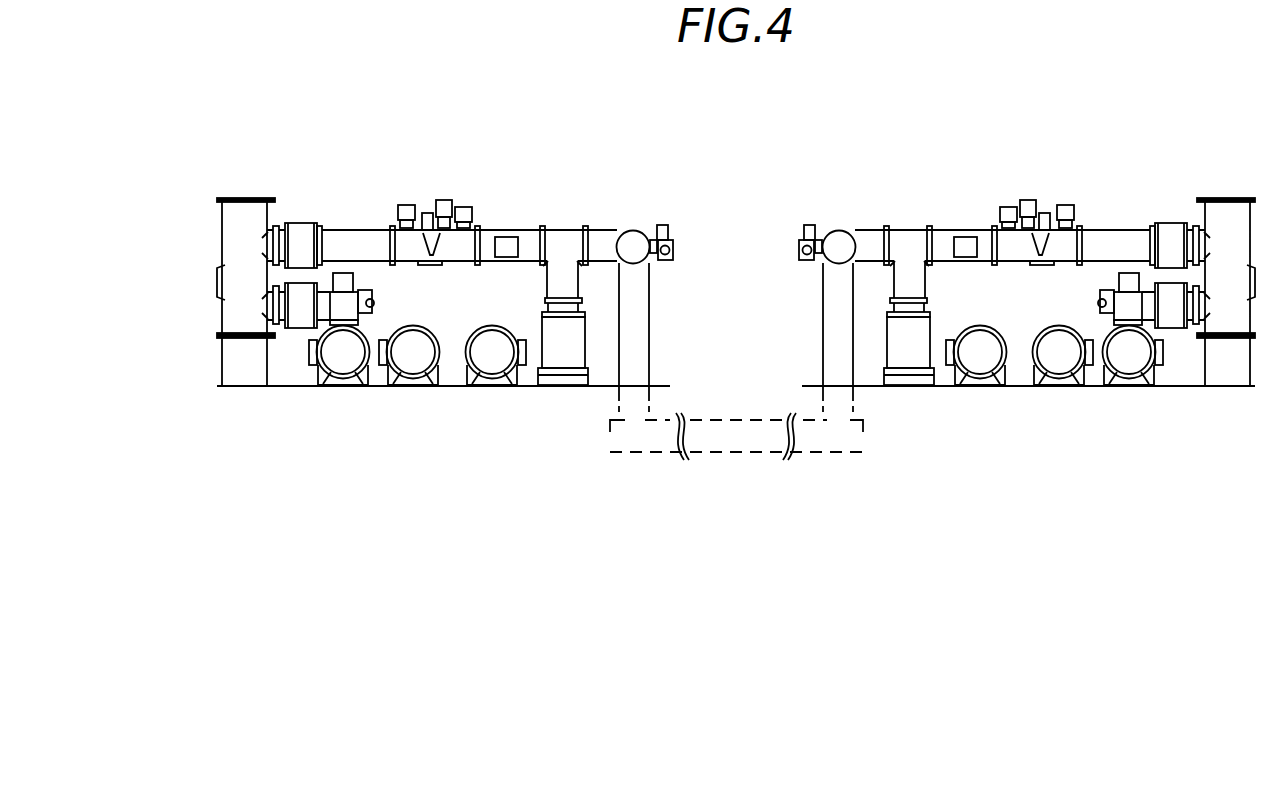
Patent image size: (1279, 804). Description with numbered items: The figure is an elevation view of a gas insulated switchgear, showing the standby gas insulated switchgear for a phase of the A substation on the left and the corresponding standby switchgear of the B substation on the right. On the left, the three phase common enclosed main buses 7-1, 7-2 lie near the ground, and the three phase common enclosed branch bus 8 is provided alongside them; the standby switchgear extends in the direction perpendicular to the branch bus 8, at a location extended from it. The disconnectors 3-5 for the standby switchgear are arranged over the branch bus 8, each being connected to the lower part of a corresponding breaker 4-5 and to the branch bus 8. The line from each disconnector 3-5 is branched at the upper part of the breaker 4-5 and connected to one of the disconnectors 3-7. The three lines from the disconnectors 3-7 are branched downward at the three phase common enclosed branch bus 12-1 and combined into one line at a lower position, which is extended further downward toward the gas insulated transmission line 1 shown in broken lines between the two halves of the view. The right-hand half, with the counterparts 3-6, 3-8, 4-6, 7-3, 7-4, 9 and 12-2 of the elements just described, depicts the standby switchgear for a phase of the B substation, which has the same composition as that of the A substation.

The gas insulated transmission line 1 is at (738, 452).
The disconnector 3-5 is at (338, 312).
The disconnecting switch 3-6 is at (1138, 315).
The disconnector 3-7 is at (430, 230).
The disconnecting switch 3-8 is at (1042, 230).
The breaker 4-5 is at (243, 220).
The main bus 4-6 is at (1230, 220).
The three phase common enclosed main bus 7-1 is at (420, 370).
The three phase common enclosed main bus 7-2 is at (492, 370).
The circuit breaker 7-3 is at (980, 370).
The circuit breaker 7-4 is at (1052, 370).
The three phase common enclosed branch bus 8 is at (343, 370).
The circuit breaker 9 is at (1128, 370).
The three phase common enclosed branch bus 12-1 is at (633, 230).
The bushing 12-2 is at (839, 230).